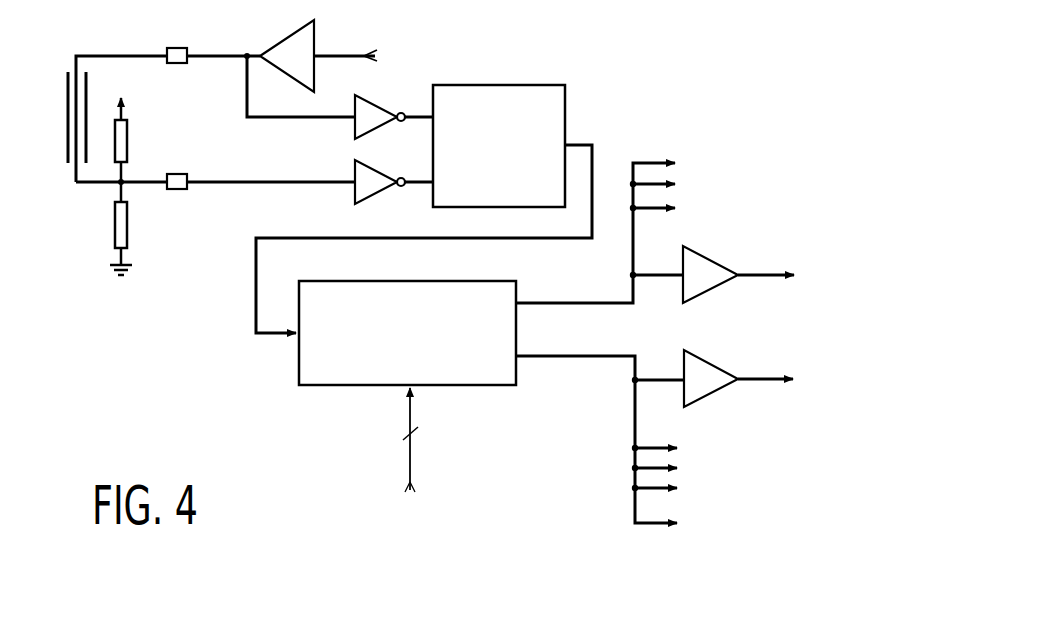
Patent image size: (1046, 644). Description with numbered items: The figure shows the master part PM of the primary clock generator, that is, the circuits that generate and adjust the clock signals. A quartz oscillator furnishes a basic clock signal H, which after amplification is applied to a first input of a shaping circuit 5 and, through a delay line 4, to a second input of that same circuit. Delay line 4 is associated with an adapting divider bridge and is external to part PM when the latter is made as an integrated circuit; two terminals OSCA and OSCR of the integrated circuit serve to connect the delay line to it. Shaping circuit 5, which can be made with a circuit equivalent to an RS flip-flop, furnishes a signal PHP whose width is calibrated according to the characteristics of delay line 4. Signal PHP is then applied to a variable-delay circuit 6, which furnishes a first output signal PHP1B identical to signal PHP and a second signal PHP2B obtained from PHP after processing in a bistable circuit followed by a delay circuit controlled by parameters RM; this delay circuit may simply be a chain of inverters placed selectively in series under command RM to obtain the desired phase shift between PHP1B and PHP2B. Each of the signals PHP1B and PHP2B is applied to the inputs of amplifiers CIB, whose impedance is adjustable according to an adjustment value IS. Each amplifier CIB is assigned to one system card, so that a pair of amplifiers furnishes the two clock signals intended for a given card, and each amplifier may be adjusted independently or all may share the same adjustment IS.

The delay line 4 is at (66, 92).
The shaping circuit 5 is at (520, 84).
The variable-delay circuit 6 is at (338, 387).
The terminal OSCA is at (195, 72).
The terminal OSCR is at (187, 188).
The basic clock signal H is at (343, 54).
The master part PM is at (610, 76).
The signal PHP is at (254, 277).
The first output signal PHP1B is at (633, 305).
The second signal PHP2B is at (553, 359).
The amplifier CIB is at (714, 294).
The adjustment value IS is at (707, 249).
The parameters RM is at (428, 442).